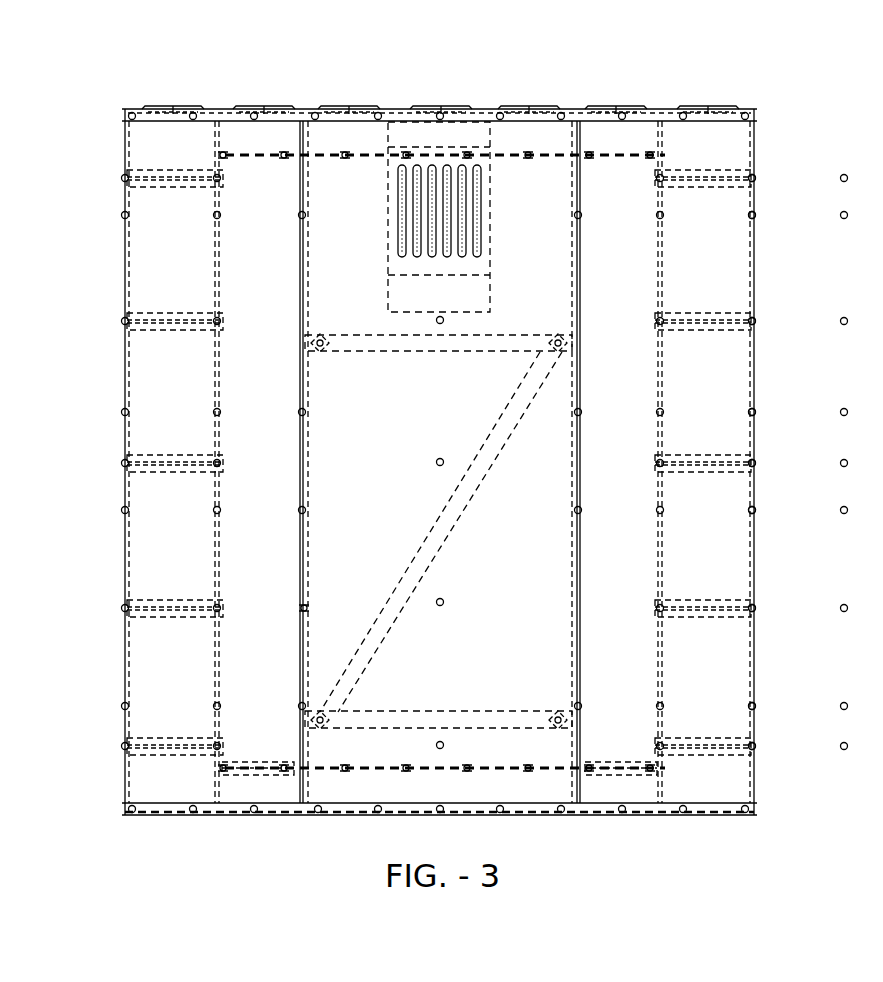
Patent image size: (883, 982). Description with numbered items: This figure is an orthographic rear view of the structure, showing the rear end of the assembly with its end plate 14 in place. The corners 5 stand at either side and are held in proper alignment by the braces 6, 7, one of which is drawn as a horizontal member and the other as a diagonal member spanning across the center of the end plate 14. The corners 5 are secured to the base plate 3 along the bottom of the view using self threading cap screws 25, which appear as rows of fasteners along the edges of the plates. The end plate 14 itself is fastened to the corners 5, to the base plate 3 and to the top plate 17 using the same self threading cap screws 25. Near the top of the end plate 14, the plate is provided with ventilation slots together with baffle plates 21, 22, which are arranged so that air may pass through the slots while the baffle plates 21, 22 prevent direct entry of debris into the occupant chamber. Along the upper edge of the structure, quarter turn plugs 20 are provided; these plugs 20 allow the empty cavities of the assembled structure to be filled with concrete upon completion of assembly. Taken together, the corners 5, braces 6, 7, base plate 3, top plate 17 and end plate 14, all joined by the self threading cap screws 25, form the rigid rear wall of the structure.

The base plate 3 is at (711, 822).
The corner 5 is at (164, 260).
The brace 6 is at (358, 733).
The brace 7 is at (338, 662).
The end plate 14 is at (380, 456).
The top plate 17 is at (307, 110).
The quarter turn plug 20 is at (744, 104).
The baffle plate 21 is at (409, 143).
The baffle plate 22 is at (497, 137).
The self threading cap screw 25 is at (630, 108).